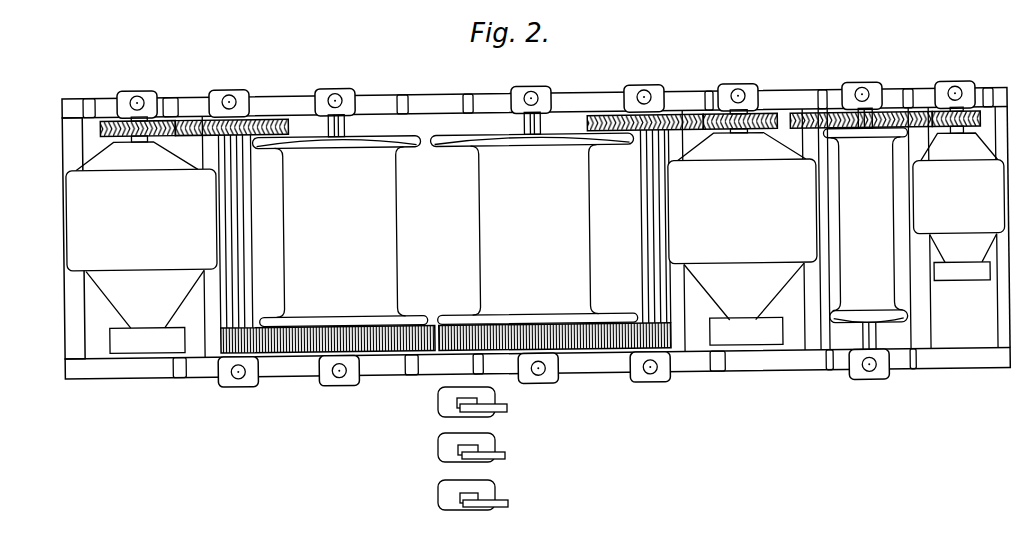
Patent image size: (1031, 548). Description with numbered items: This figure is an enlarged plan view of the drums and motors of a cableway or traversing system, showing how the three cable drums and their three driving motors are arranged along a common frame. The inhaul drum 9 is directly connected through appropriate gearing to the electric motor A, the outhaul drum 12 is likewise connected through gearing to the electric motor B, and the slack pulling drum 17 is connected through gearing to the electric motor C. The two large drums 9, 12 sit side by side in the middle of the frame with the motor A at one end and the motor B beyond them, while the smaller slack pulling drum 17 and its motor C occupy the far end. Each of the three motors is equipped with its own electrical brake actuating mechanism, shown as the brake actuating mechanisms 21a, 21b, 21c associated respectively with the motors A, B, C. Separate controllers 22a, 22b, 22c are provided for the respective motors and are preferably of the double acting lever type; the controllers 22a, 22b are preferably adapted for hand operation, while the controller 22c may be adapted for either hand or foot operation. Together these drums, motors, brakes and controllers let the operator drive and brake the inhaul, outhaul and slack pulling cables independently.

The electric motor A is at (82, 210).
The electric motor B is at (723, 252).
The electric motor C is at (959, 228).
The inhaul drum 9 is at (395, 226).
The outhaul drum 12 is at (486, 256).
The slack pulling drum 17 is at (866, 239).
The electrical brake actuating mechanism 21a is at (148, 345).
The electrical brake actuating mechanism 21b is at (763, 338).
The electrical brake actuating mechanism 21c is at (967, 273).
The controller 22a is at (504, 409).
The controller 22b is at (505, 454).
The controller 22c is at (507, 502).